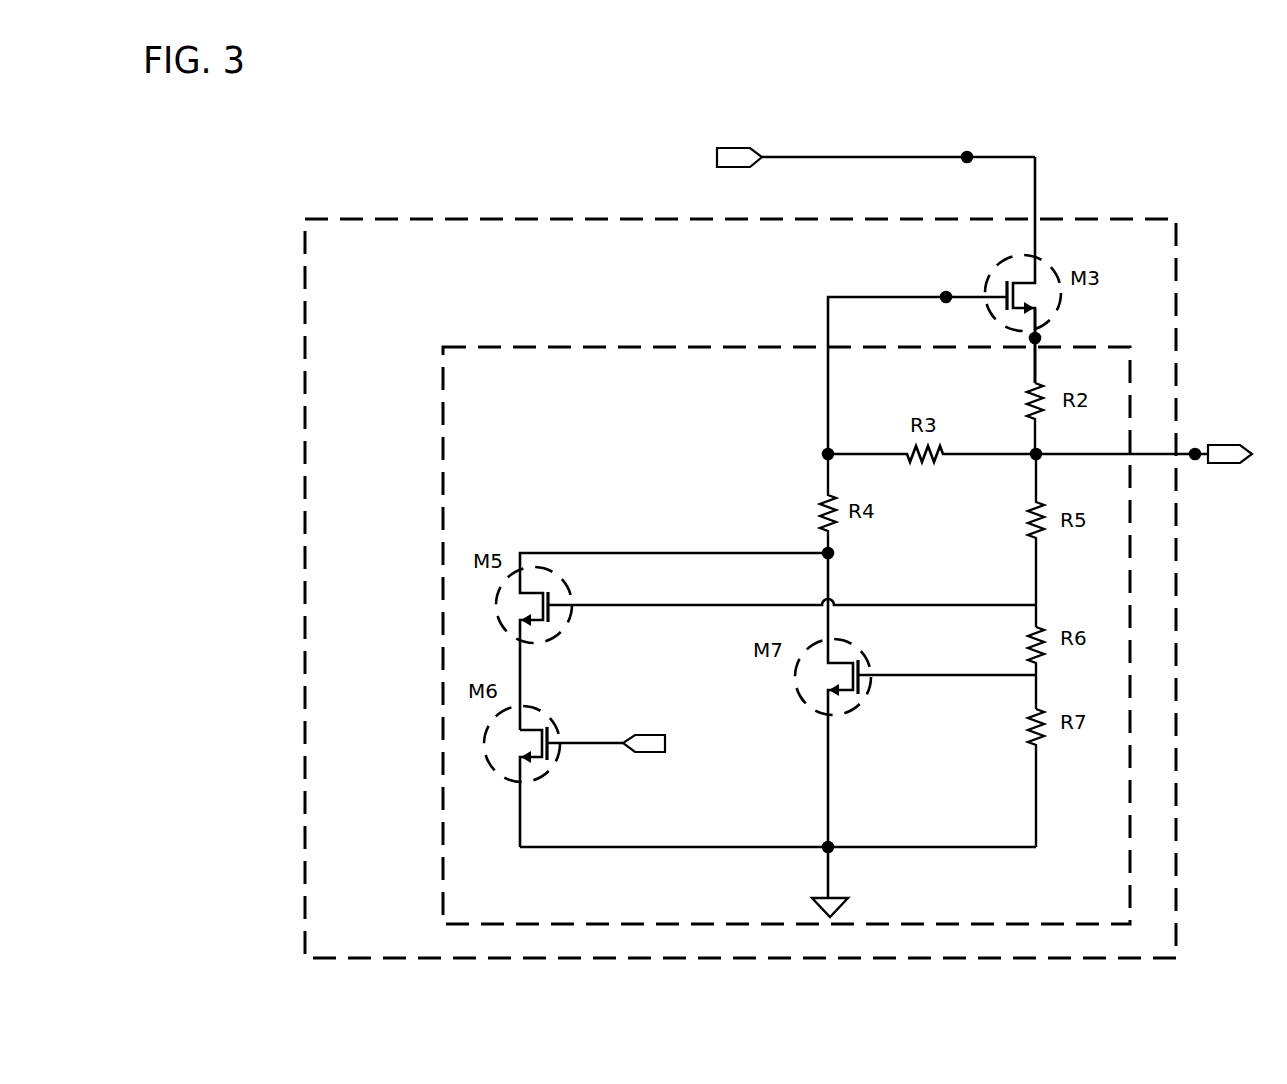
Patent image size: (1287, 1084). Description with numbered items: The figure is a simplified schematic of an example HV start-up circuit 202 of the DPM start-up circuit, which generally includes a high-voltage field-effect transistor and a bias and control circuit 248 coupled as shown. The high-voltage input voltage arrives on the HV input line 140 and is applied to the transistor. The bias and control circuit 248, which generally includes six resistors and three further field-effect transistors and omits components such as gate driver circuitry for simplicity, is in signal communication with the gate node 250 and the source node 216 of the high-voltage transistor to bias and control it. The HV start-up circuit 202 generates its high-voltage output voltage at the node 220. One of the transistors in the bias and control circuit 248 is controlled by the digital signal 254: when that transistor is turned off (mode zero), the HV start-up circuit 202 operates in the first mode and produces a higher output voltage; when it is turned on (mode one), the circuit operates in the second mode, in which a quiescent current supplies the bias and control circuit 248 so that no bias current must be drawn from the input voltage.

The HV input line 140 is at (970, 155).
The HV start-up circuit 202 is at (740, 588).
The source node of the FET M3 216 is at (1040, 335).
The node 220 is at (1200, 458).
The bias and control circuit 248 is at (786, 635).
The gate node 250 is at (944, 295).
The digital signal 254 is at (638, 750).